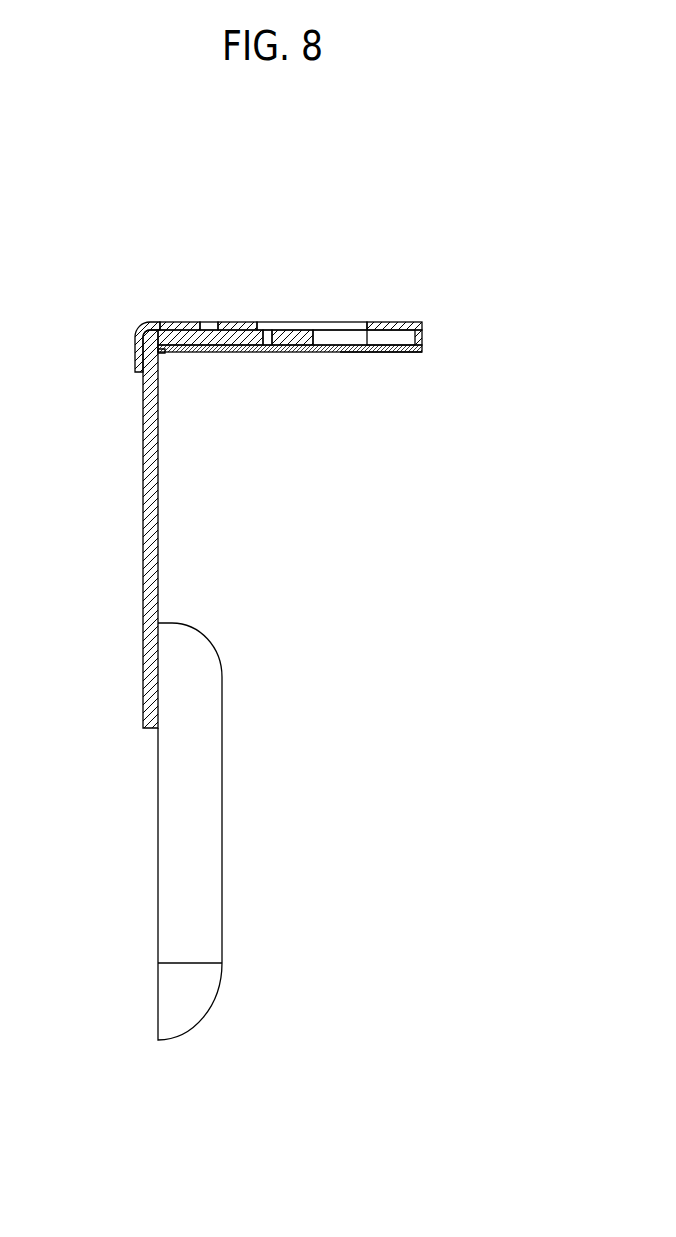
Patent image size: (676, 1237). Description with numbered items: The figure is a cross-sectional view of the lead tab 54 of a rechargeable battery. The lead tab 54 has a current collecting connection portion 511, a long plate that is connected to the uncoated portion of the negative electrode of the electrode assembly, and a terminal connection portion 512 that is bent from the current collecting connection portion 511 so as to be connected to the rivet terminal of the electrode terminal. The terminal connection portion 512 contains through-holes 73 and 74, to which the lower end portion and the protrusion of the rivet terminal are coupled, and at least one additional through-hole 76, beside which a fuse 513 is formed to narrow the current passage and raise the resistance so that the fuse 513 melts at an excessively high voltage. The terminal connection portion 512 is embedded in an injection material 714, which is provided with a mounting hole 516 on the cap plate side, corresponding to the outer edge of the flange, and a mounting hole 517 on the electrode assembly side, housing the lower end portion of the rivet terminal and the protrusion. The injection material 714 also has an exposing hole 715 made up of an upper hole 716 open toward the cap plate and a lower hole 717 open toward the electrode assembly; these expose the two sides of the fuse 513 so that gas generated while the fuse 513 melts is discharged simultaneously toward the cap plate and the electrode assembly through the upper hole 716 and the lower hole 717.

The lead tab 54 is at (267, 163).
The current collecting connection portion 511 is at (155, 522).
The terminal connection portion 512 is at (292, 335).
The fuse 513 is at (210, 333).
The mounting hole 516 is at (367, 327).
The mounting hole 517 is at (362, 352).
The injection material 714 is at (143, 327).
The exposing hole 715 is at (482, 450).
The upper hole 716 is at (212, 323).
The lower hole 717 is at (205, 353).
The through-hole 73 is at (333, 338).
The through-hole 74 is at (267, 338).
The through-hole 76 is at (215, 353).